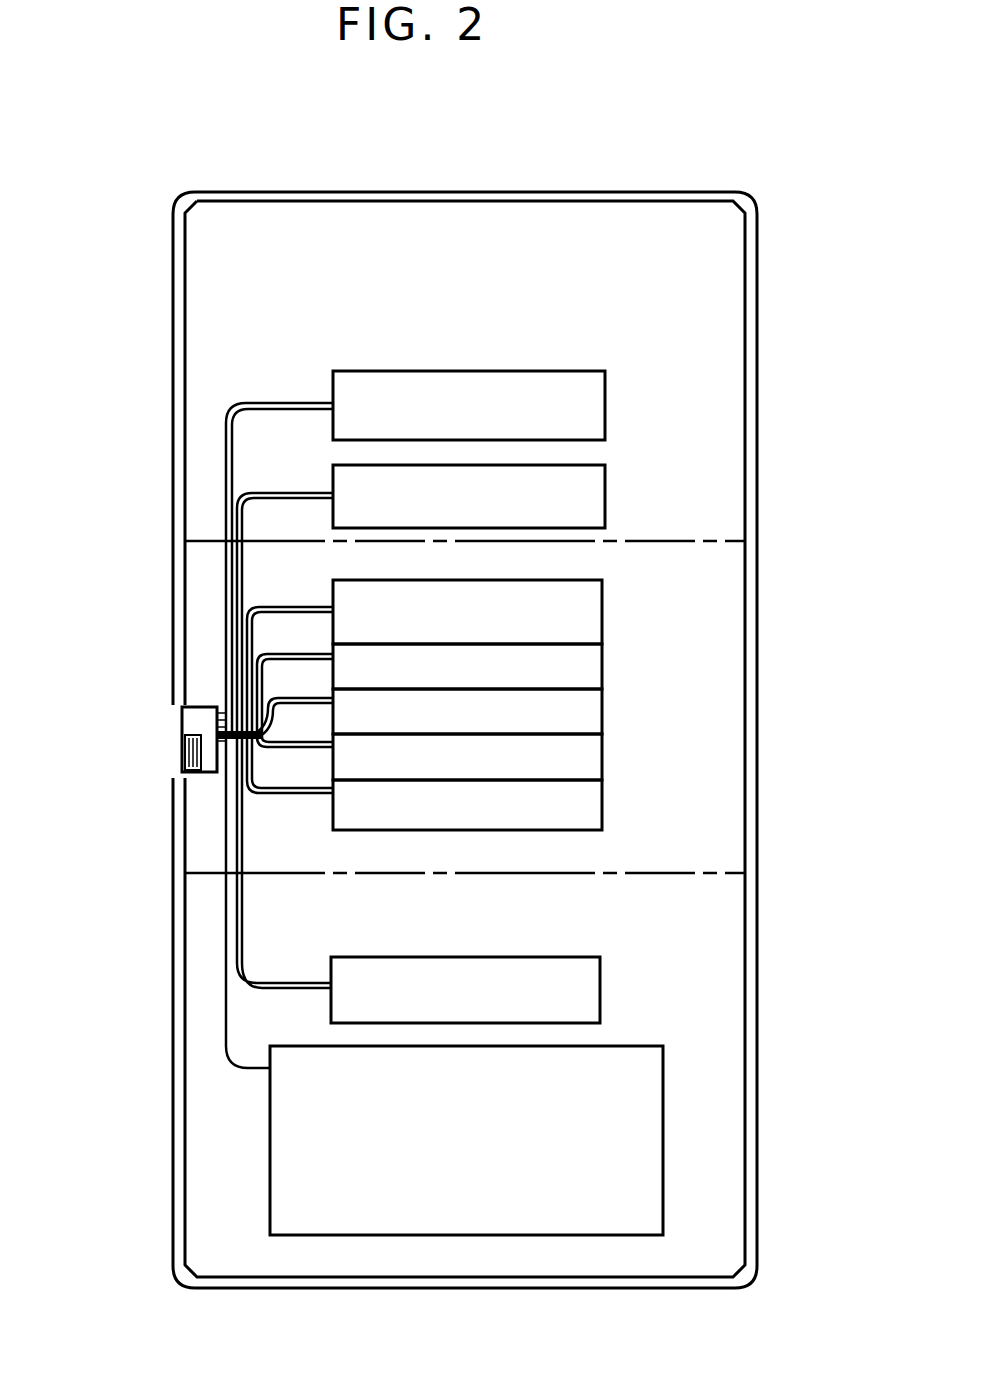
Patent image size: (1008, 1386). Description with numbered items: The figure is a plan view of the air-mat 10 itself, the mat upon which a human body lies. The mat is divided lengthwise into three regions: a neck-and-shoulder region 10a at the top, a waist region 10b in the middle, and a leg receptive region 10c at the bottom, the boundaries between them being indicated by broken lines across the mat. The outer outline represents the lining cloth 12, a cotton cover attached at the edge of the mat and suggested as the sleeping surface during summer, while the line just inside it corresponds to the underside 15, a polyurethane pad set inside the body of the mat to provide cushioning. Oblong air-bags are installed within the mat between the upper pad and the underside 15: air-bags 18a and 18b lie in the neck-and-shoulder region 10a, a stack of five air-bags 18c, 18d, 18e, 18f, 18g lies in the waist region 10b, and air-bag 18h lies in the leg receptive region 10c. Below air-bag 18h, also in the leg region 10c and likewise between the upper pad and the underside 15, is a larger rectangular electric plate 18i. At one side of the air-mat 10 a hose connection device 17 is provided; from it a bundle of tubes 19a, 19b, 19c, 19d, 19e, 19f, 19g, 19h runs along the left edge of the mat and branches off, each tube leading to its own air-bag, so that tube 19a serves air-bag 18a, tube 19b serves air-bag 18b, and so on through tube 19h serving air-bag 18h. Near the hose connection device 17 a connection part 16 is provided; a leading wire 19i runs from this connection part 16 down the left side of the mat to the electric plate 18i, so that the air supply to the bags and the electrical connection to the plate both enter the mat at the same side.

The air-mat 10 is at (770, 490).
The neck-and-shoulder region 10a is at (722, 378).
The waist region 10b is at (722, 677).
The leg receptive region 10c is at (722, 1037).
The lining cloth 12 is at (373, 190).
The underside 15 is at (525, 238).
The connection part 16 is at (182, 762).
The hose connection device 17 is at (198, 716).
The air-bag 18a is at (606, 400).
The air-bag 18b is at (606, 497).
The air-bag 18c is at (603, 617).
The air-bag 18d is at (603, 668).
The air-bag 18e is at (603, 714).
The air-bag 18f is at (603, 760).
The air-bag 18g is at (603, 805).
The air-bag 18h is at (601, 985).
The electric plate 18i is at (664, 1160).
The tube 19a is at (268, 400).
The tube 19b is at (266, 490).
The tube 19c is at (278, 604).
The tube 19d is at (316, 630).
The tube 19e is at (268, 676).
The tube 19f is at (270, 722).
The tube 19g is at (276, 798).
The tube 19h is at (282, 982).
The leading wire 19i is at (240, 1042).